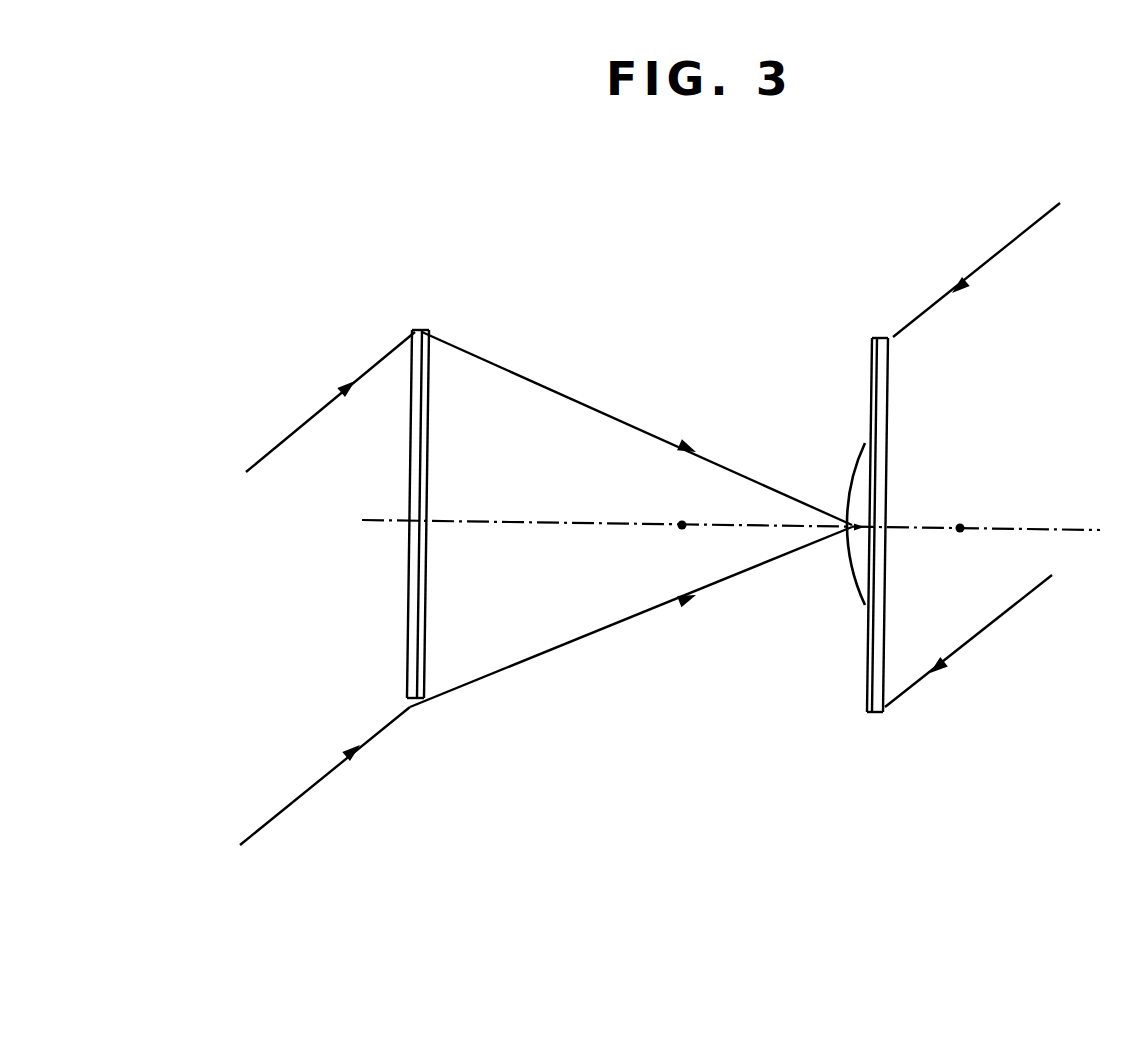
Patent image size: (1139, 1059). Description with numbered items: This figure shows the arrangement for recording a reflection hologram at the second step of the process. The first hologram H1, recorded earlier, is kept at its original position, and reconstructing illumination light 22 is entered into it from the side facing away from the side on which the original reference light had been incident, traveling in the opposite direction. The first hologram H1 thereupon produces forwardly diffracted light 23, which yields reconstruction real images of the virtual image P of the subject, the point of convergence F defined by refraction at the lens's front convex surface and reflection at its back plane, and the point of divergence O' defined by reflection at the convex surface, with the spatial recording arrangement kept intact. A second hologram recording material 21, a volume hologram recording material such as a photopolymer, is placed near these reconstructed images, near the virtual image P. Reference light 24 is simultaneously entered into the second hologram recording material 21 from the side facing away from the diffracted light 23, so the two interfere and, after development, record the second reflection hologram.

The second hologram recording material 21 is at (868, 712).
The reconstructing illumination light 22 is at (292, 432).
The forwardly diffracted light 23 is at (622, 625).
The reference light 24 is at (1013, 607).
The first hologram H1 is at (422, 712).
The point of convergence F is at (674, 531).
The virtual image of the subject P is at (849, 481).
The point of divergence O' is at (976, 475).